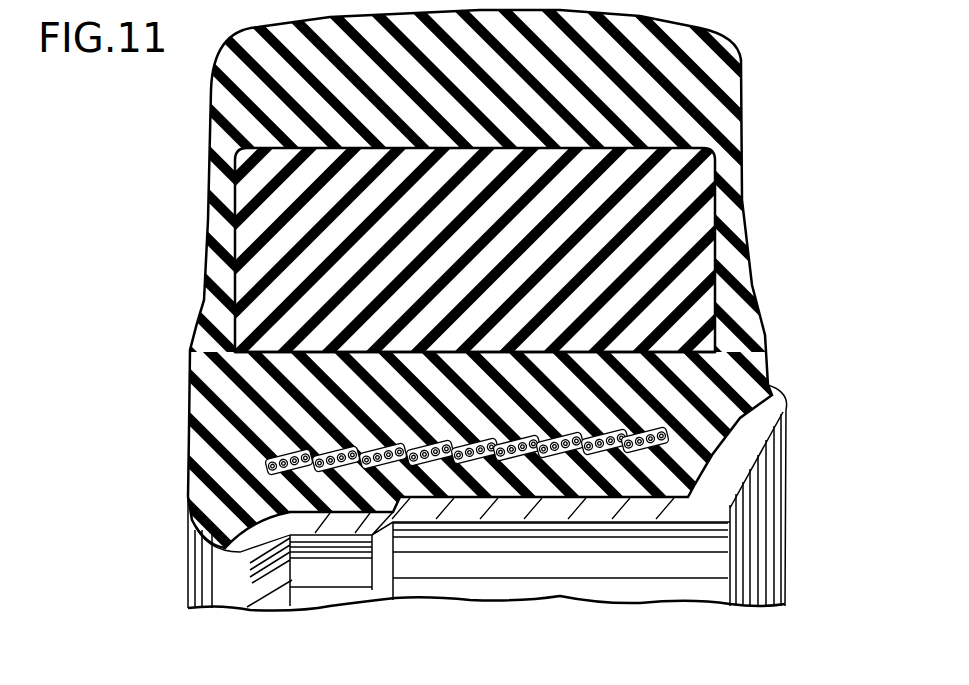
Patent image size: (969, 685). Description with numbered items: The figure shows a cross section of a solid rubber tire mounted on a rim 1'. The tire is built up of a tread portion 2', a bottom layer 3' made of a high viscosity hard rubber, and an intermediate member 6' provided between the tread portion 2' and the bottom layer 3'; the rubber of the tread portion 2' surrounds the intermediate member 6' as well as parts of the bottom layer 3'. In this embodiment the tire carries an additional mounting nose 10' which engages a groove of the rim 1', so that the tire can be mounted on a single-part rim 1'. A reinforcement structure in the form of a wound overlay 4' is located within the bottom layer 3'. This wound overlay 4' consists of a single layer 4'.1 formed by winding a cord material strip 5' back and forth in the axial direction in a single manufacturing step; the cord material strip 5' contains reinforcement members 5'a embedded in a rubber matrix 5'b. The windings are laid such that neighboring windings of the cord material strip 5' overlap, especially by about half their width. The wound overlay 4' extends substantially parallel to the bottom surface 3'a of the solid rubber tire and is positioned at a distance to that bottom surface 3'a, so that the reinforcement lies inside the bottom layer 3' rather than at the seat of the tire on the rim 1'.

The tread portion 2' is at (484, 342).
The intermediate member 6' is at (484, 342).
The bottom layer 3' is at (484, 342).
The mounting nose 10' is at (195, 507).
The single layer of the wound overlay 4'.1 is at (569, 449).
The bottom surface 3'a is at (510, 572).
The rim 1' is at (454, 498).
The reinforcement members 5'a is at (312, 564).
The cord material strip 5' is at (410, 552).
The wound overlay 4' is at (537, 547).
The rubber matrix 5'b is at (679, 551).